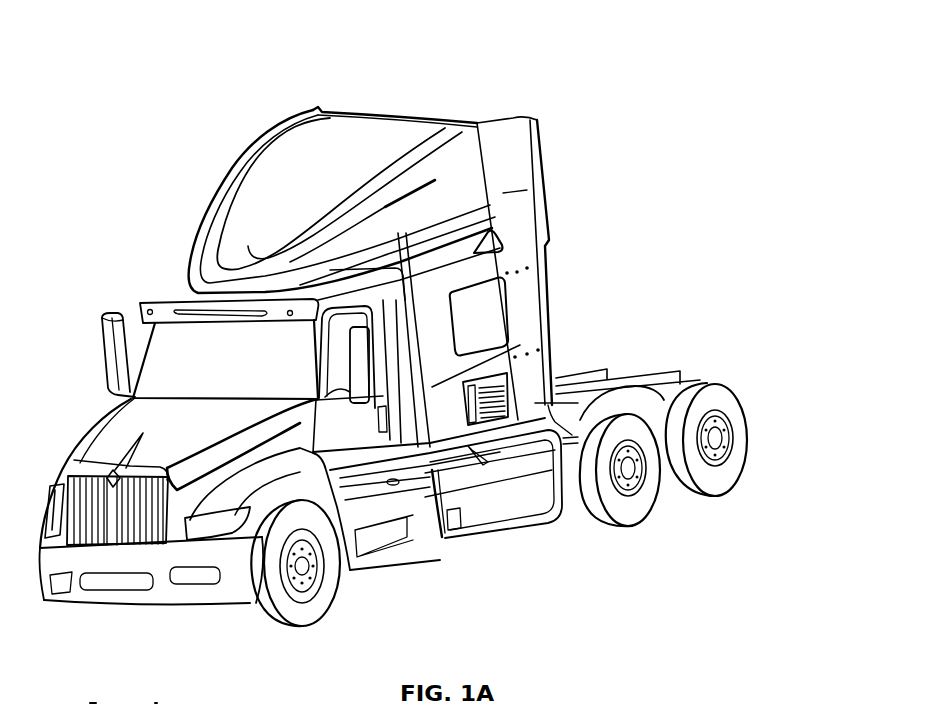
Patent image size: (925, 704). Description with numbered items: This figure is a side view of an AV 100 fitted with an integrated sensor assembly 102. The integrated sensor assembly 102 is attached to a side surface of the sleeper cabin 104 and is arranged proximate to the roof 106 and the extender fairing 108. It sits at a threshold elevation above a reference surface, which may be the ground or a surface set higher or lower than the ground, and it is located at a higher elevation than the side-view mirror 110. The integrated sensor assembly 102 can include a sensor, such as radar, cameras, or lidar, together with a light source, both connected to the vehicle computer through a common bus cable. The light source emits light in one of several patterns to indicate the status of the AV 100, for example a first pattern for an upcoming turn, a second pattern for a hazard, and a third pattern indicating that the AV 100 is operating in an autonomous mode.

The AV 100 is at (150, 302).
The integrated sensor assembly 102 is at (395, 286).
The sleeper cabin 104 is at (528, 305).
The roof 106 is at (357, 133).
The extender fairing 108 is at (502, 197).
The side-view mirror 110 is at (388, 412).